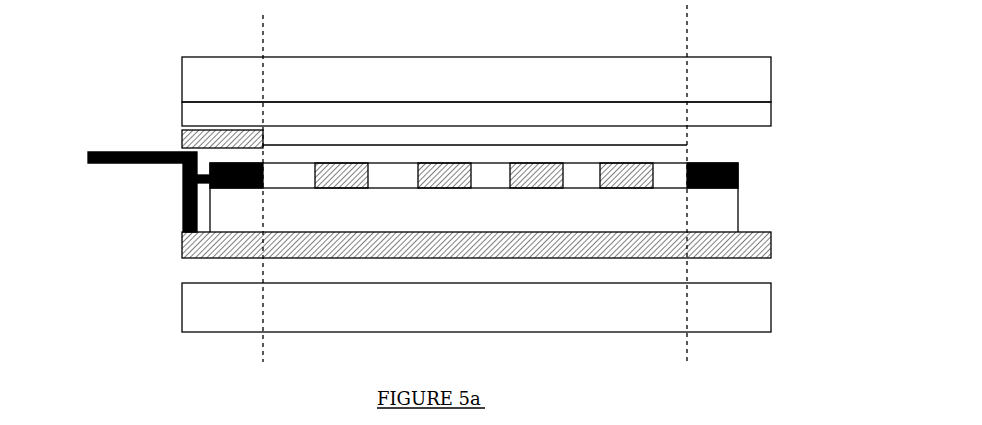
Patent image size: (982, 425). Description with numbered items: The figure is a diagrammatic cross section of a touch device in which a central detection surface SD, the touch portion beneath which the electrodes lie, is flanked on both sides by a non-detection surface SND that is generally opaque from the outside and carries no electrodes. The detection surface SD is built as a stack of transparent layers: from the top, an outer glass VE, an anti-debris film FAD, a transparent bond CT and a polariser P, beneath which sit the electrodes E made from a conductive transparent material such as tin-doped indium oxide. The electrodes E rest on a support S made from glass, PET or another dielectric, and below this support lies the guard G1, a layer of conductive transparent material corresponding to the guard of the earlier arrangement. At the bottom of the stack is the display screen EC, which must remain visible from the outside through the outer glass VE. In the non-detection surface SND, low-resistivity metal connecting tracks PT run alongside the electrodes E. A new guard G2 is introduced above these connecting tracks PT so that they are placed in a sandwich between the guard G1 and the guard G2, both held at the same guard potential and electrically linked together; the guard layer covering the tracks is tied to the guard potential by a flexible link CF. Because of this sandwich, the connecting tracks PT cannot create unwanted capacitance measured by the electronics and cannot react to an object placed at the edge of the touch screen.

The outer glass VE is at (195, 74).
The anti-debris film FAD is at (195, 115).
The guard G2 is at (182, 135).
The flexible link CF is at (131, 163).
The support S is at (227, 207).
The display screen EC is at (198, 305).
The transparent bond CT is at (677, 137).
The polariser P is at (677, 152).
The connecting tracks PT is at (738, 188).
The electrodes E is at (627, 178).
The guard G1 is at (771, 253).
The non-detection surface SND is at (466, 19).
The detection surface SD is at (449, 16).